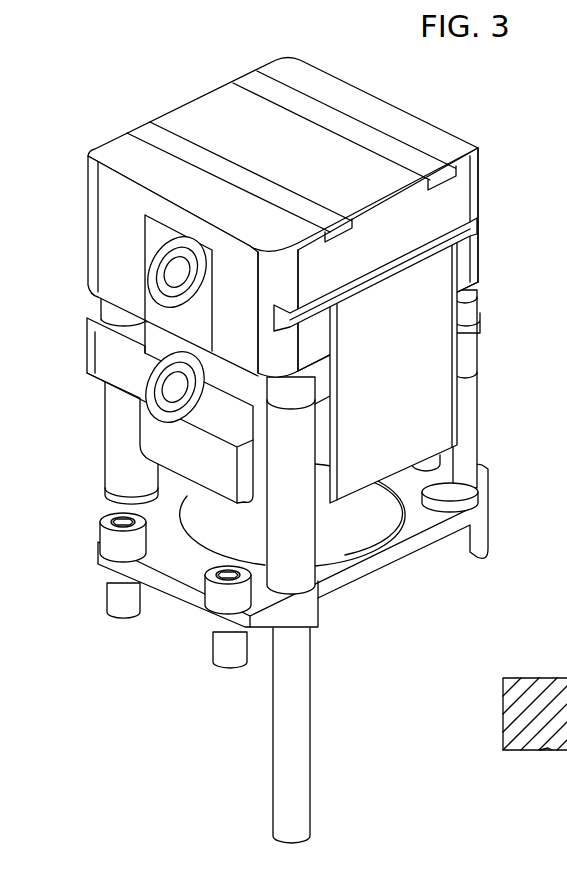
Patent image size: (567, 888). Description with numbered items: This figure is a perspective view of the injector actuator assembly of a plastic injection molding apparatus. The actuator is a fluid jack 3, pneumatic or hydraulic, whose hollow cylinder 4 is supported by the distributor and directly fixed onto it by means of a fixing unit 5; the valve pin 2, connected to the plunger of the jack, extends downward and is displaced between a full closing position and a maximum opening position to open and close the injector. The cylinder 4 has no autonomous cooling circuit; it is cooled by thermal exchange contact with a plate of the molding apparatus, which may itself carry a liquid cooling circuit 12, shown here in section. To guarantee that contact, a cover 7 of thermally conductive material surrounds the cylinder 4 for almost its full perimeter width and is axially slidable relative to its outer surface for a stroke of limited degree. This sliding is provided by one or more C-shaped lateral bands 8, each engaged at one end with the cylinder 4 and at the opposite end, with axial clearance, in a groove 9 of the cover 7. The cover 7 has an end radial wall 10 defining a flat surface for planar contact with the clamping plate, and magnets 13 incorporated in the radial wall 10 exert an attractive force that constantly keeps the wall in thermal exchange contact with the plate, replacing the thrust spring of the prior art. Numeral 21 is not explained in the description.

The valve pin 2 is at (291, 745).
The fluid jack 3 is at (133, 432).
The cylinder 4 is at (143, 317).
The fixing unit 5 is at (390, 567).
The cover 7 is at (488, 178).
The C-shaped lateral band 8 is at (432, 399).
The groove 9 is at (483, 223).
The end radial wall 10 is at (217, 115).
The liquid cooling circuit 12 is at (566, 668).
The magnets 13 is at (142, 128).
The recess 21 is at (548, 750).